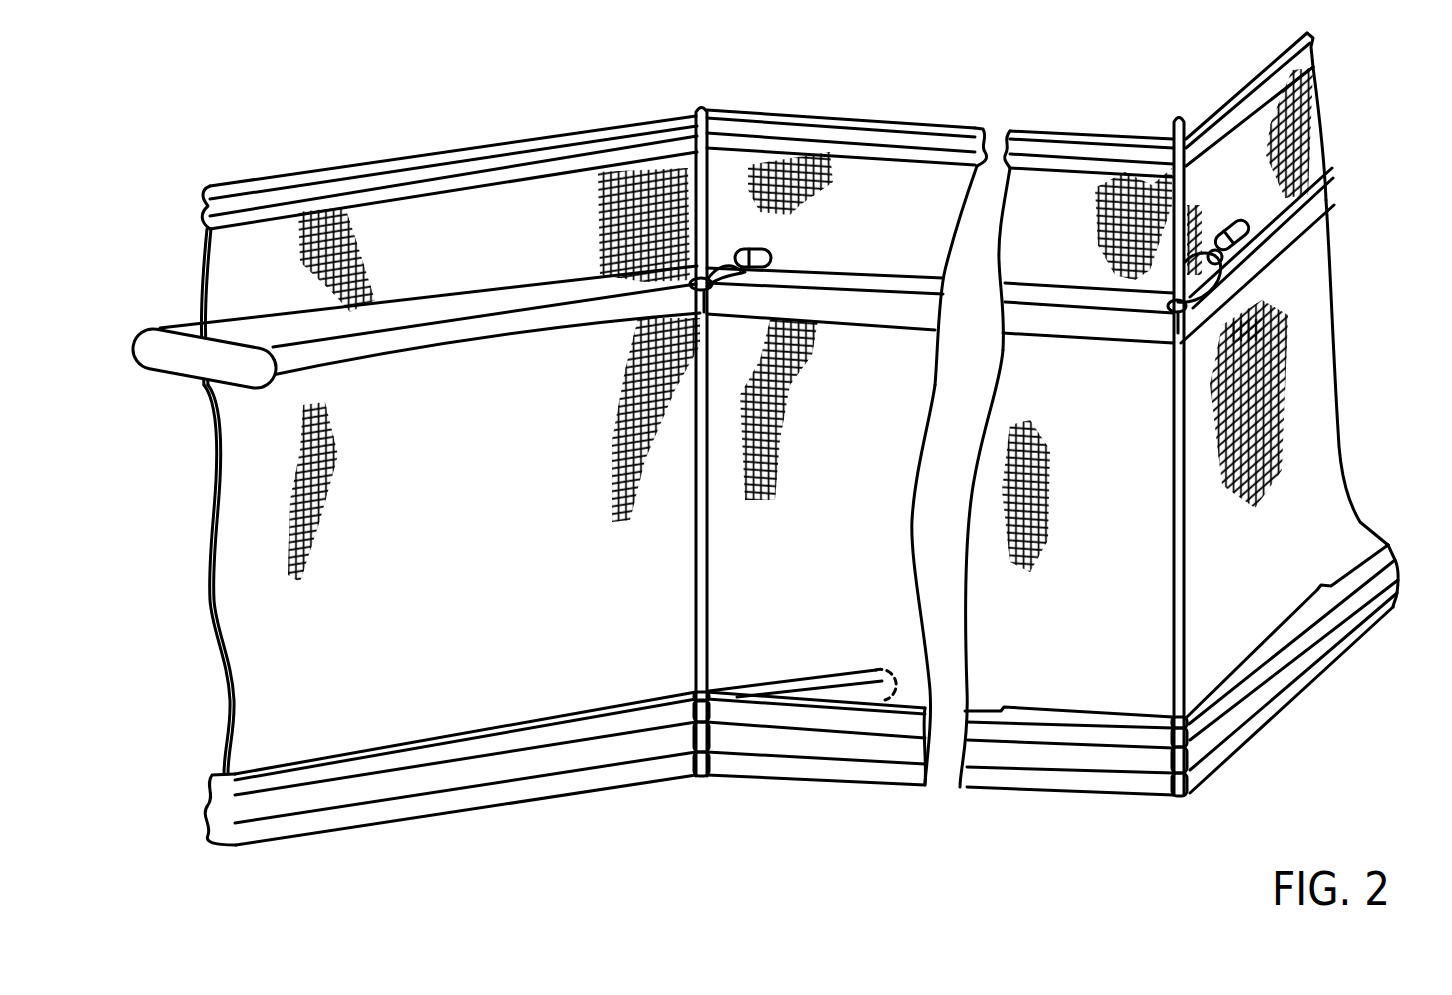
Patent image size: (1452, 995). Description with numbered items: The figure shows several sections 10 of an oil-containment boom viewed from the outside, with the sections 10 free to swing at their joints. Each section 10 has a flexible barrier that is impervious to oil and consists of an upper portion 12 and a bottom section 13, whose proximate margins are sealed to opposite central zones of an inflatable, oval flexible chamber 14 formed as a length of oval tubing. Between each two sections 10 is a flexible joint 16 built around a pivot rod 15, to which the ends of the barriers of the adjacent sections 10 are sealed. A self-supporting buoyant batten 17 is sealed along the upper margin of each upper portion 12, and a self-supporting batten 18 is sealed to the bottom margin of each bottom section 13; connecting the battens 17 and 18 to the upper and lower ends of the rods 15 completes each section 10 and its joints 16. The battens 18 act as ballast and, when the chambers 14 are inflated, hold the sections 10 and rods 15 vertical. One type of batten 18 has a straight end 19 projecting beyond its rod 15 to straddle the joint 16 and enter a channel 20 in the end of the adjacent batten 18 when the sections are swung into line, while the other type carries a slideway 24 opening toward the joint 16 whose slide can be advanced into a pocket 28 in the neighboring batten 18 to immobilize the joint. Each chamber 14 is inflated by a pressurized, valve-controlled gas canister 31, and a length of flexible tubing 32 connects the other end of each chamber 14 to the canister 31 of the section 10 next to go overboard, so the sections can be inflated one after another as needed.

The section 10 is at (462, 123).
The upper portion 12 is at (470, 253).
The bottom section 13 is at (440, 545).
The inflatable oval flexible chamber 14 is at (400, 345).
The pivot rod 15 is at (701, 108).
The flexible joint 16 is at (700, 777).
The buoyant batten 17 is at (316, 186).
The ballasting batten 18 is at (437, 773).
The straight end 19 is at (855, 680).
The channel 20 is at (800, 700).
The slideway 24 is at (1060, 716).
The pocket 28 is at (704, 289).
The gas canister 31 is at (758, 246).
The flexible tubing 32 is at (745, 274).